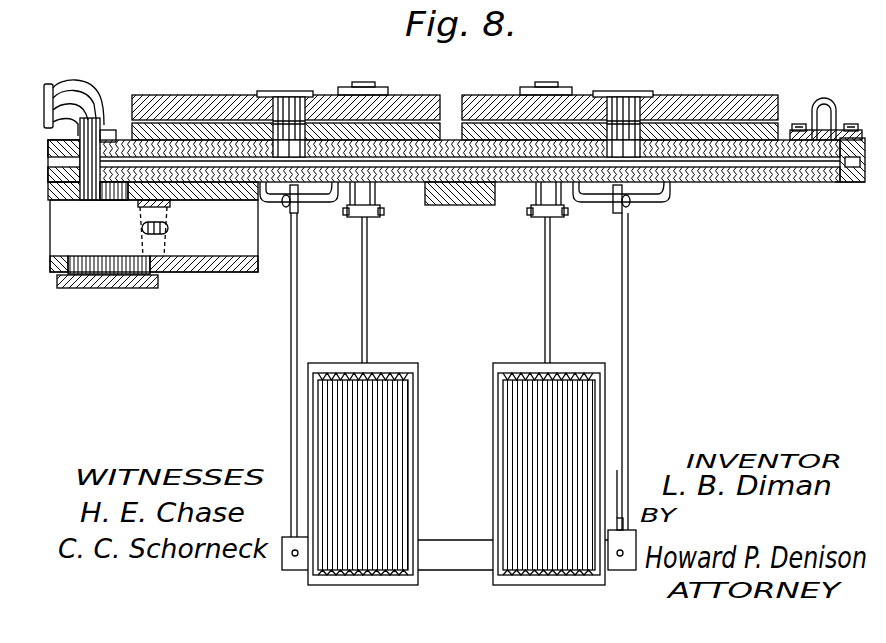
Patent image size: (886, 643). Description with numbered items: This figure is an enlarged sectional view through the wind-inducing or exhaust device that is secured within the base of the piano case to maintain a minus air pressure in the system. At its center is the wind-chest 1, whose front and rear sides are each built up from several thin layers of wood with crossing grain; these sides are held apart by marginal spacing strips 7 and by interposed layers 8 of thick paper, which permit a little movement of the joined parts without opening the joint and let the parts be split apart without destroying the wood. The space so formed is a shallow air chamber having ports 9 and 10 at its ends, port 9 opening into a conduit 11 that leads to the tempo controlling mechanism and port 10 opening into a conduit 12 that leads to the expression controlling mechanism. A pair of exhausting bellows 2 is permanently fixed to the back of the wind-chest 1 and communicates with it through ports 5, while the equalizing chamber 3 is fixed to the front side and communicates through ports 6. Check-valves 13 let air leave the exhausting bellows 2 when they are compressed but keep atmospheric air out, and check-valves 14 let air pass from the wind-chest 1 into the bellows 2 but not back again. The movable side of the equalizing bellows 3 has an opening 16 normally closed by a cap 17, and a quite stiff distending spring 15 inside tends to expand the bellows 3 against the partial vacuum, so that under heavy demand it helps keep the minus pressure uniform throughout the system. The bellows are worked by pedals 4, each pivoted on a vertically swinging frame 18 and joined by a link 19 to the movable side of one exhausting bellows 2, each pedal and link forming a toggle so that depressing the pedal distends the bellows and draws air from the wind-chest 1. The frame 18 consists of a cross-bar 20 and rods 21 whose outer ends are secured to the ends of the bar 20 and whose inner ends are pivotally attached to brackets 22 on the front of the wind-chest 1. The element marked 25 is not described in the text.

The wind-chest 1 is at (745, 160).
The exhausting bellows 2 is at (202, 132).
The equalizing chamber 3 is at (212, 252).
The pedal 4 is at (510, 398).
The port 5 is at (290, 140).
The port 6 is at (108, 170).
The marginal spacing strip 7 is at (64, 192).
The paper layer 8 is at (84, 190).
The port 9 is at (828, 160).
The port 10 is at (92, 150).
The conduit 11 is at (823, 100).
The conduit 12 is at (66, 92).
The check-valve 13 is at (276, 100).
The check-valve 14 is at (293, 137).
The distending spring 15 is at (170, 229).
The opening 16 is at (104, 264).
The cap 17 is at (130, 275).
The vertically swinging frame 18 is at (634, 520).
The link 19 is at (368, 300).
The cross-bar 20 is at (456, 548).
The rod 21 is at (291, 398).
The bracket 22 is at (289, 207).
The center block 25 is at (450, 200).